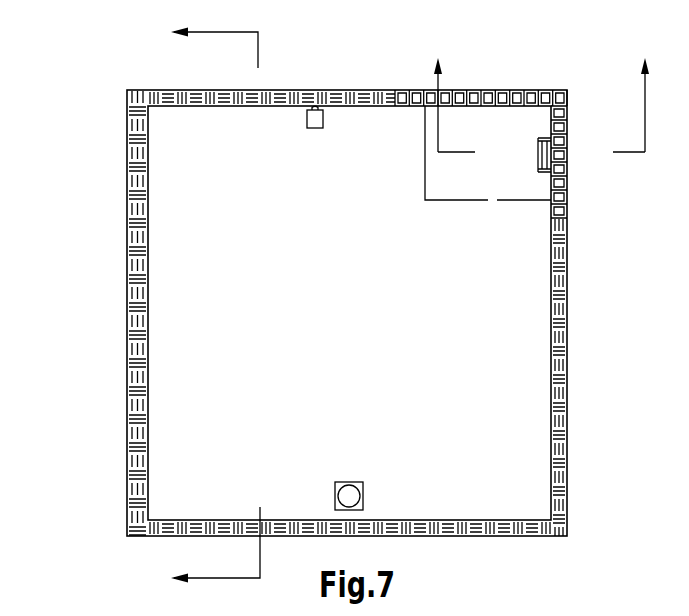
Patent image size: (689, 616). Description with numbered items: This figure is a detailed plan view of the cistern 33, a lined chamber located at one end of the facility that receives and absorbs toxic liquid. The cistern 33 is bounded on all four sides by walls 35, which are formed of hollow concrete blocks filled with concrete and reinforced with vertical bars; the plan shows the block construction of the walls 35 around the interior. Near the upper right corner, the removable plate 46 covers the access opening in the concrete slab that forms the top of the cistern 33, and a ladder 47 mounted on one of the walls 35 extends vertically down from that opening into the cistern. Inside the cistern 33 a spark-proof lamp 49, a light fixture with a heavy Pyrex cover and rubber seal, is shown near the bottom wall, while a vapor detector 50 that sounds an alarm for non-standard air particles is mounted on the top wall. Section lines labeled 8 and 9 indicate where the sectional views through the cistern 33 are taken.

The cistern 33 is at (100, 285).
The walls 35 is at (558, 418).
The removable plate 46 is at (497, 123).
The ladder 47 is at (537, 157).
The spark-proof lamp 49 is at (336, 494).
The vapor detector 50 is at (316, 130).
The section line 8- 8 is at (208, 305).
The section line 9- 9 is at (538, 118).